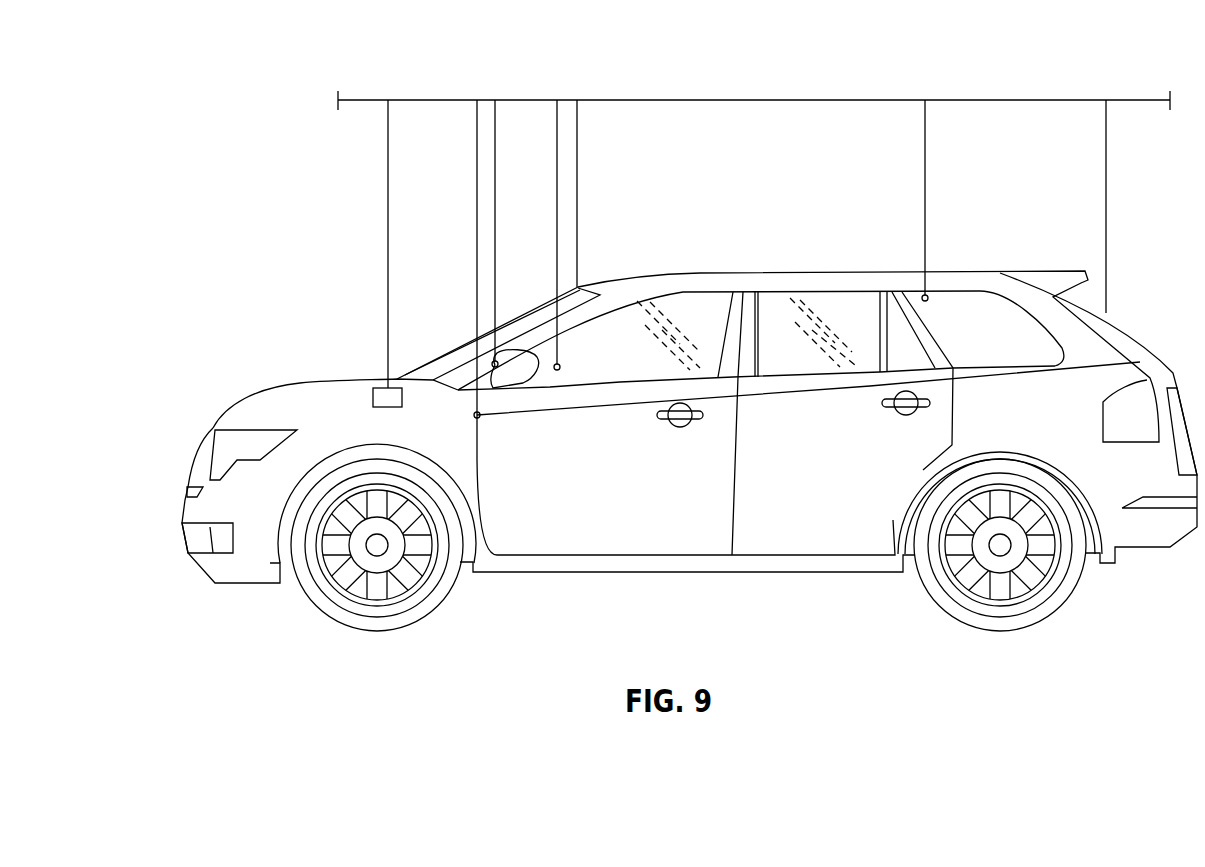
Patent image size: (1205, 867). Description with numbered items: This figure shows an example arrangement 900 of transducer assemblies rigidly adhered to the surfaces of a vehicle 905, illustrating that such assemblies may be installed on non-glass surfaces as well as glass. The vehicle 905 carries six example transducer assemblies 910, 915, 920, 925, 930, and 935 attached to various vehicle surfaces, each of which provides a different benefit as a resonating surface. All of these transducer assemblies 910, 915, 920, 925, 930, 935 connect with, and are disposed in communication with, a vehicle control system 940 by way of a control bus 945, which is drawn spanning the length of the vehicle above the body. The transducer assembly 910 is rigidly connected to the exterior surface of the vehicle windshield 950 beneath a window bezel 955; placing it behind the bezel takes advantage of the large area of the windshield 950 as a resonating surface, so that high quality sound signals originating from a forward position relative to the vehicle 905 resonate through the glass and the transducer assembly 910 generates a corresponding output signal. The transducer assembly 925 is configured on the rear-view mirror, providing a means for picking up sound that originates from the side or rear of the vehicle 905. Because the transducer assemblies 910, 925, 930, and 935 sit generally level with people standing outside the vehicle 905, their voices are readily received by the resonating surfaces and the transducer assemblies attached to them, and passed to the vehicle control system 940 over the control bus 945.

The vehicle system 900 is at (261, 62).
The vehicle 905 is at (220, 421).
The transducer assembly 910 is at (490, 362).
The transducer assembly 915 is at (474, 418).
The transducer assembly 920 is at (580, 286).
The transducer assembly 925 is at (560, 366).
The transducer assembly 930 is at (923, 296).
The transducer assembly 935 is at (1084, 277).
The vehicle control system 940 is at (373, 392).
The control bus 945 is at (758, 100).
The vehicle windshield 950 is at (533, 317).
The window bezel 955 is at (483, 389).